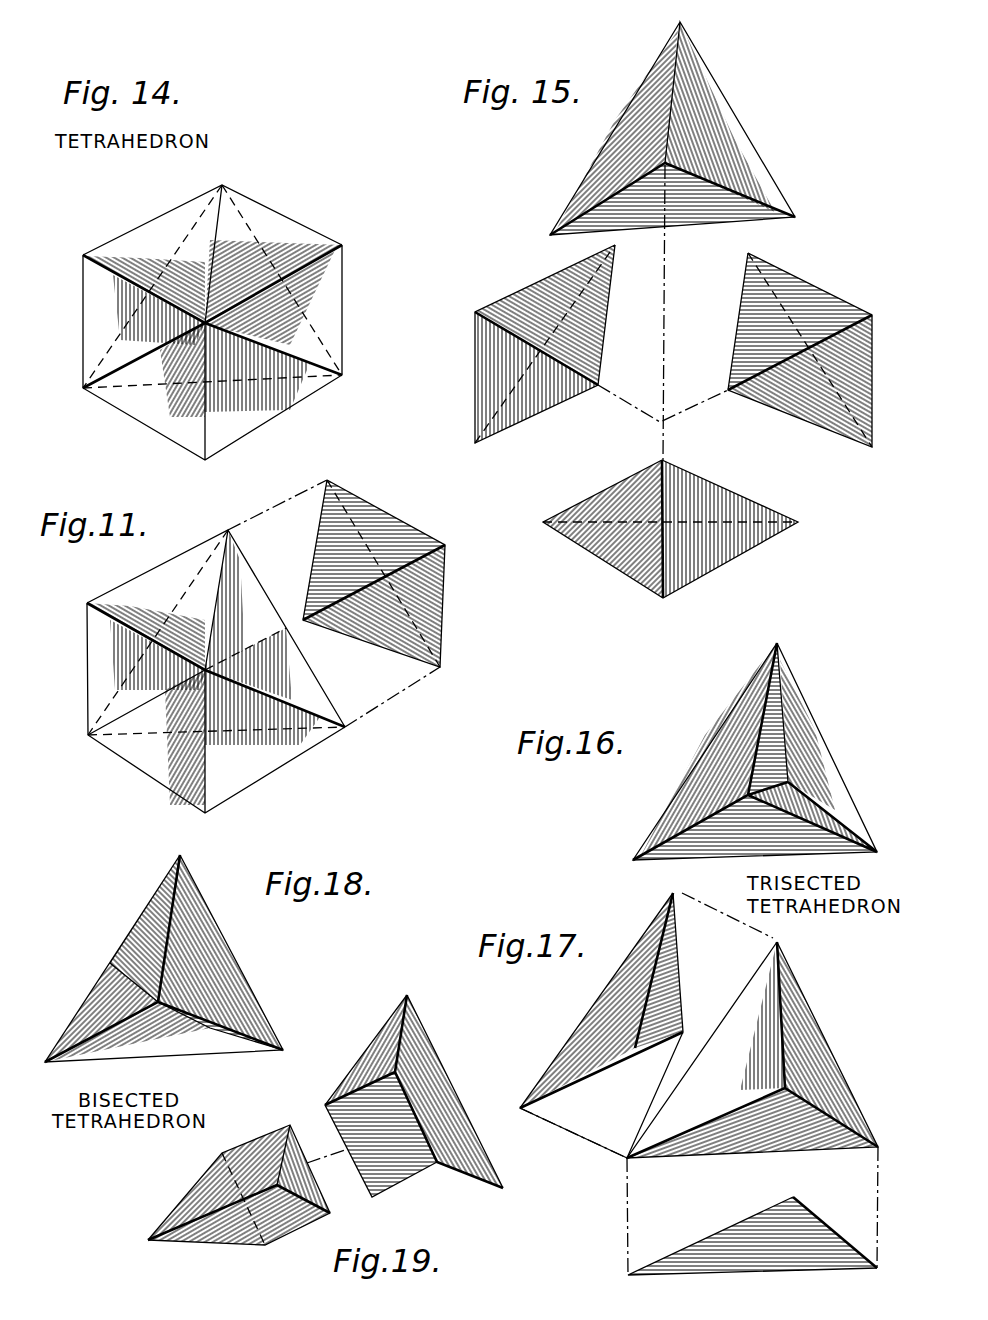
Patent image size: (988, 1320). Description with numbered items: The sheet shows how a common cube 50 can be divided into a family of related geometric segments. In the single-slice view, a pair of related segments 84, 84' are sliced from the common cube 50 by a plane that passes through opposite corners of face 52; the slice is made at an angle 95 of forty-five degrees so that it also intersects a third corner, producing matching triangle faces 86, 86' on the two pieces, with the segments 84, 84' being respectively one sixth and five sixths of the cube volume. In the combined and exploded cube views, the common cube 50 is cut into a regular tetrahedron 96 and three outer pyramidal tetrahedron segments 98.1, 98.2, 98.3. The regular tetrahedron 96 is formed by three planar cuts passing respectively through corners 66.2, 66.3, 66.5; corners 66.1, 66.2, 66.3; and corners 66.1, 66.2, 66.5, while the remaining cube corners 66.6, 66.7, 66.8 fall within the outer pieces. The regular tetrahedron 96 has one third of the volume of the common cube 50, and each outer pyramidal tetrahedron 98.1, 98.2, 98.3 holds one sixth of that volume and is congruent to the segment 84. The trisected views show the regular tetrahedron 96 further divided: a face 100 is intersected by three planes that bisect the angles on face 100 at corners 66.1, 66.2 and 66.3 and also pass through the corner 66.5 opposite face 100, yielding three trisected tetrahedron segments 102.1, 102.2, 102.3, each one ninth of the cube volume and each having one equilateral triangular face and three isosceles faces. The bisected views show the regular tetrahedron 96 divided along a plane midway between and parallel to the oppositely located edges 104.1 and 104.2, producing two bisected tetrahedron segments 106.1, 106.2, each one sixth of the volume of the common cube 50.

In FIG. 14, the common cube 50 is at (312, 215).
In FIG. 14, the face 52 is at (163, 222).
In FIG. 11, the face 52 is at (133, 585).
In FIG. 14, the corner 66.1 is at (222, 185).
In FIG. 11, the corner 66.1 is at (228, 530).
In FIG. 15, the corner 66.1 is at (682, 23).
In FIG. 16, the corner 66.1 is at (777, 643).
In FIG. 18, the corner 66.1 is at (180, 855).
In FIG. 19, the corner 66.1 is at (407, 995).
In FIG. 17, the corner 66.1 is at (777, 942).
In FIG. 14, the corner 66.2 is at (205, 323).
In FIG. 11, the corner 66.2 is at (207, 668).
In FIG. 15, the corner 66.2 is at (670, 155).
In FIG. 16, the corner 66.2 is at (748, 795).
In FIG. 17, the corner 66.2 is at (793, 1197).
In FIG. 14, the corner 66.3 is at (342, 375).
In FIG. 11, the corner 66.3 is at (345, 727).
In FIG. 15, the corner 66.3 is at (795, 217).
In FIG. 16, the corner 66.3 is at (877, 852).
In FIG. 18, the corner 66.3 is at (283, 1050).
In FIG. 19, the corner 66.3 is at (503, 1188).
In FIG. 17, the corner 66.3 is at (878, 1147).
In FIG. 14, the corner 66.5 is at (83, 388).
In FIG. 15, the corner 66.5 is at (550, 235).
In FIG. 16, the corner 66.5 is at (633, 860).
In FIG. 18, the corner 66.5 is at (45, 1062).
In FIG. 19, the corner 66.5 is at (148, 1240).
In FIG. 17, the corner 66.5 is at (627, 1160).
In FIG. 14, the corner 66.6 is at (205, 460).
In FIG. 15, the corner 66.6 is at (475, 443).
In FIG. 14, the corner 66.7 is at (83, 255).
In FIG. 14, the corner 66.8 is at (342, 245).
In FIG. 11, the corner 66.8 is at (445, 545).
In FIG. 15, the corner 66.8 is at (872, 315).
In FIG. 11, the segment 84 is at (382, 597).
In FIG. 11, the segment 84' is at (71, 667).
In FIG. 11, the triangle face 86 is at (292, 529).
In FIG. 11, the triangle face 86' is at (282, 571).
In FIG. 11, the angle 95 is at (270, 708).
In FIG. 15, the regular tetrahedron 96 is at (600, 157).
In FIG. 18, the regular tetrahedron 96 is at (116, 918).
In FIG. 15, the outer pyramidal tetrahedron segment 98.1 is at (610, 288).
In FIG. 15, the outer pyramidal tetrahedron segment 98.2 is at (733, 340).
In FIG. 15, the outer pyramidal tetrahedron segment 98.3 is at (733, 488).
In FIG. 15, the face 100 is at (707, 88).
In FIG. 16, the face 100 is at (807, 730).
In FIG. 16, the trisected tetrahedron segment 102.1 is at (680, 787).
In FIG. 17, the trisected tetrahedron segment 102.1 is at (583, 1020).
In FIG. 16, the trisected tetrahedron segment 102.2 is at (698, 848).
In FIG. 17, the trisected tetrahedron segment 102.2 is at (673, 1240).
In FIG. 16, the trisected tetrahedron segment 102.3 is at (793, 677).
In FIG. 17, the trisected tetrahedron segment 102.3 is at (813, 1010).
In FIG. 15, the edge 104.1 is at (763, 155).
In FIG. 19, the edge 104.1 is at (458, 1083).
In FIG. 18, the edge 104.2 is at (103, 1020).
In FIG. 19, the edge 104.2 is at (180, 1203).
In FIG. 18, the bisected tetrahedron segment 106.1 is at (215, 955).
In FIG. 19, the bisected tetrahedron segment 106.1 is at (423, 1047).
In FIG. 18, the bisected tetrahedron segment 106.2 is at (150, 1047).
In FIG. 19, the bisected tetrahedron segment 106.2 is at (237, 1235).